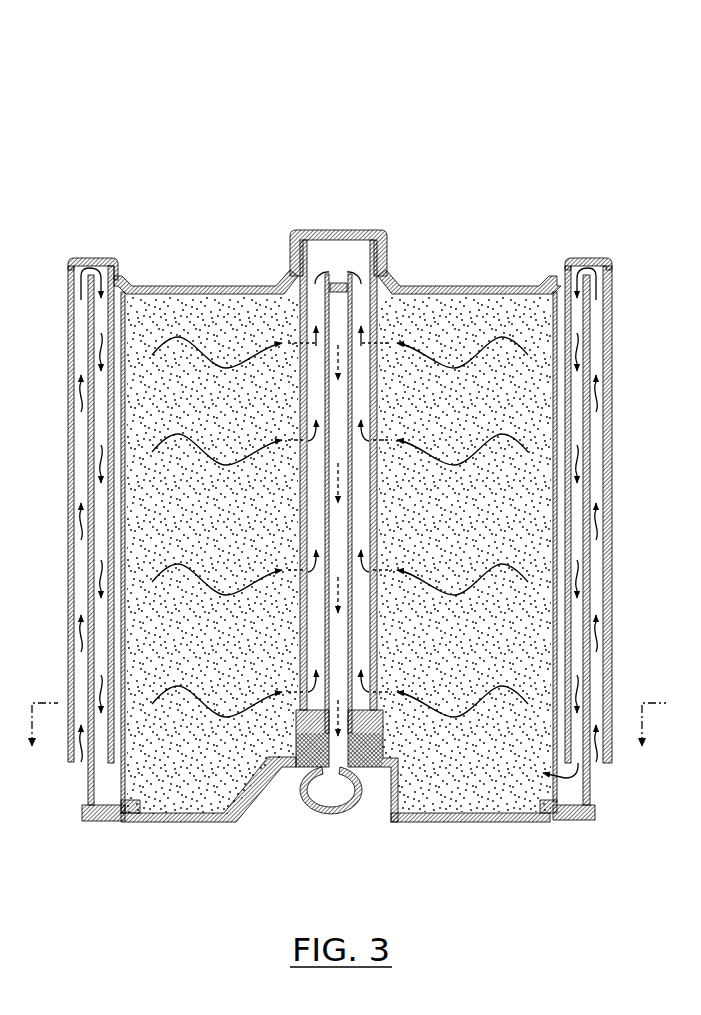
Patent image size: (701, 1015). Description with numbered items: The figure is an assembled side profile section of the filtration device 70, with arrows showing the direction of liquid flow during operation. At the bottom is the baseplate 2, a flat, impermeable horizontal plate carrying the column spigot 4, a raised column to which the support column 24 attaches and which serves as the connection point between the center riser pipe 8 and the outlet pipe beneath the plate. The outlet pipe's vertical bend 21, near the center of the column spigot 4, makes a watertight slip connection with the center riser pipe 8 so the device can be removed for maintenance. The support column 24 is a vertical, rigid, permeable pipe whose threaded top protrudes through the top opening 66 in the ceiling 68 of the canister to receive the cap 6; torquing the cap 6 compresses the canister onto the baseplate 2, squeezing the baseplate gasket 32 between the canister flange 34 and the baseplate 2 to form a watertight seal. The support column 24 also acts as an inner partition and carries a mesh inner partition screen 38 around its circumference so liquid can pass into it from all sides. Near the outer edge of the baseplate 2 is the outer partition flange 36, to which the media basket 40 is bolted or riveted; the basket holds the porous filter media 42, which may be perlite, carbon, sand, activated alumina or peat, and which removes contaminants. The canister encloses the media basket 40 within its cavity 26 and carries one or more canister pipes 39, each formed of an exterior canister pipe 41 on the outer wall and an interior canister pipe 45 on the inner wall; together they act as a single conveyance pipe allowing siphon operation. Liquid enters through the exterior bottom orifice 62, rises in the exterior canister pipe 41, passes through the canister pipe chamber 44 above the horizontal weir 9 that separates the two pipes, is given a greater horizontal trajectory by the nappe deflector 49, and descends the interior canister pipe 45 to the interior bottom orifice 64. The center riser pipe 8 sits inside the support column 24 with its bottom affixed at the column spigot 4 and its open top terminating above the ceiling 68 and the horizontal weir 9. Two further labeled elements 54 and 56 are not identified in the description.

The baseplate 2 is at (70, 773).
The column spigot 4 is at (403, 777).
The cap 6 is at (384, 250).
The center riser pipe 8 is at (356, 392).
The horizontal weir 9 is at (586, 280).
The vertical bend 21 is at (332, 814).
The support column 24 is at (376, 637).
The cavity 26 is at (100, 765).
The baseplate gasket 32 is at (562, 820).
The canister flange 34 is at (580, 823).
The outer partition flange 36 is at (538, 812).
The inner partition screen 38 is at (302, 628).
The canister pipe 39 is at (80, 256).
The media basket 40 is at (552, 415).
The exterior canister pipe 41 is at (82, 513).
The filter media 42 is at (442, 563).
The canister pipe chamber 44 is at (577, 267).
The interior canister pipe 45 is at (98, 513).
The nappe deflector 49 is at (97, 284).
The right inner jacket wall 54 is at (560, 373).
The annular channel flow 56 is at (359, 497).
The exterior bottom orifice 62 is at (81, 762).
The interior bottom orifice 64 is at (100, 766).
The top opening 66 is at (340, 264).
The ceiling 68 is at (248, 283).
The filtration device 70 is at (485, 133).